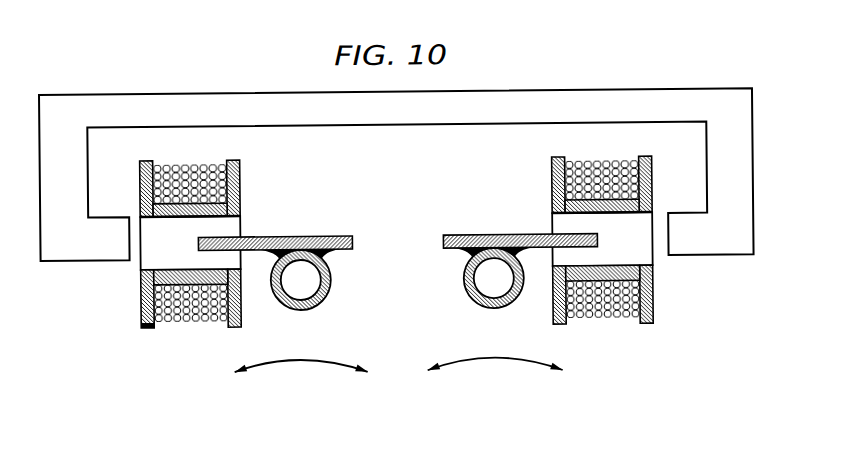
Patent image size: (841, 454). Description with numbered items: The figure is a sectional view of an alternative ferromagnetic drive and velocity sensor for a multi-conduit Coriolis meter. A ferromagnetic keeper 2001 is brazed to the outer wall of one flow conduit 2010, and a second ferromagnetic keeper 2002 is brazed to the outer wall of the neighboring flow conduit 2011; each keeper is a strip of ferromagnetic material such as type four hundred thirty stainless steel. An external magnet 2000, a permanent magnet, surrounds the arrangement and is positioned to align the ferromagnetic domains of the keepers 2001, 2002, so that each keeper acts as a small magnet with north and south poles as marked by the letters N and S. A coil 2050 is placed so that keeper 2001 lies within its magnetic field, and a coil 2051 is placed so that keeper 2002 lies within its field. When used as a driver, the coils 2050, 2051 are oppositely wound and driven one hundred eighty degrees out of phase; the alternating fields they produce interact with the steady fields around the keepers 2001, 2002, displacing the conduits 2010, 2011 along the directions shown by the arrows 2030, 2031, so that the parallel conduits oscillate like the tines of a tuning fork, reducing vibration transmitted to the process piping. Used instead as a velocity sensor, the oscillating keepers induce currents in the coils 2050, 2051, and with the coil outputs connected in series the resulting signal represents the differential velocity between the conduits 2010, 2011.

The external magnet 2000 is at (704, 95).
The coil 2050 is at (204, 162).
The coil 2051 is at (587, 164).
The ferromagnetic keeper 2001 is at (262, 235).
The ferromagnetic keeper 2002 is at (477, 236).
The flow conduit 2010 is at (330, 283).
The flow conduit 2011 is at (463, 284).
The arrow 2030 is at (294, 365).
The arrow 2031 is at (497, 364).